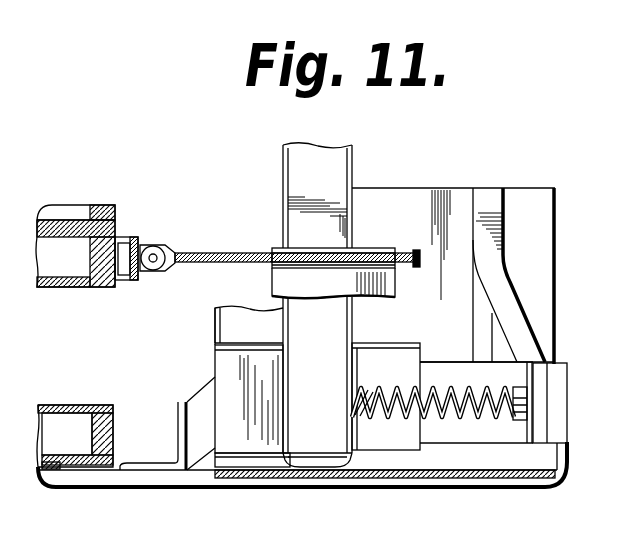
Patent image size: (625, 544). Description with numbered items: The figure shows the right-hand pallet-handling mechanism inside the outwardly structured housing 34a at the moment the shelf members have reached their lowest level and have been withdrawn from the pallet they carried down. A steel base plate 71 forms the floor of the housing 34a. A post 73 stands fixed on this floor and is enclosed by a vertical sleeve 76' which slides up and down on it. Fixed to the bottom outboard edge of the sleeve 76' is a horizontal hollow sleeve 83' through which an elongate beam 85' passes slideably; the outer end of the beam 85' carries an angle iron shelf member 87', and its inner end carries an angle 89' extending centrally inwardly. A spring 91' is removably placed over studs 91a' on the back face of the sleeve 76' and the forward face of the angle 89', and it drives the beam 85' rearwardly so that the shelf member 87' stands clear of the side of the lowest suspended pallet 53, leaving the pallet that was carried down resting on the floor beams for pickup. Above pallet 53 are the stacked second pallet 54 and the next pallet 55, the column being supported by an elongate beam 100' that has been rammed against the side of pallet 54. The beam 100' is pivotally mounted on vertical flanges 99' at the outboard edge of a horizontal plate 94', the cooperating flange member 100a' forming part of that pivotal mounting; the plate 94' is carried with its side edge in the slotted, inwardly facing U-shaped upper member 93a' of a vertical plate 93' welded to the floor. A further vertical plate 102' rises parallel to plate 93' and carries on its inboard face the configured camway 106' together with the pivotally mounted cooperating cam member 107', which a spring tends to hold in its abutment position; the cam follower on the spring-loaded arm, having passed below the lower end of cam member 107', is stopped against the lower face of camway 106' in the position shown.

The stacked pallet 55 is at (108, 205).
The second pallet 54 is at (88, 287).
The elongate beam 100' is at (143, 238).
The vertical flanges 99' is at (174, 244).
The cooperating flange member 100a' is at (175, 277).
The plate 94' is at (297, 248).
The sleeve 76' is at (340, 305).
The upper U-member 93a' is at (342, 240).
The vertical plate 93' is at (347, 295).
The vertical plate 102' is at (453, 261).
The camway 106' is at (515, 275).
The cam member 107' is at (472, 301).
The post 73 is at (292, 328).
The housing 34a is at (223, 337).
The horizontal hollow sleeve 83' is at (232, 406).
The angle iron shelf member 87' is at (167, 423).
The pallet 53 is at (115, 406).
The base plate 71 is at (475, 468).
The elongate beam 85' is at (442, 396).
The spring 91' is at (433, 416).
The stud 91a' is at (443, 390).
The angle 89' is at (562, 392).